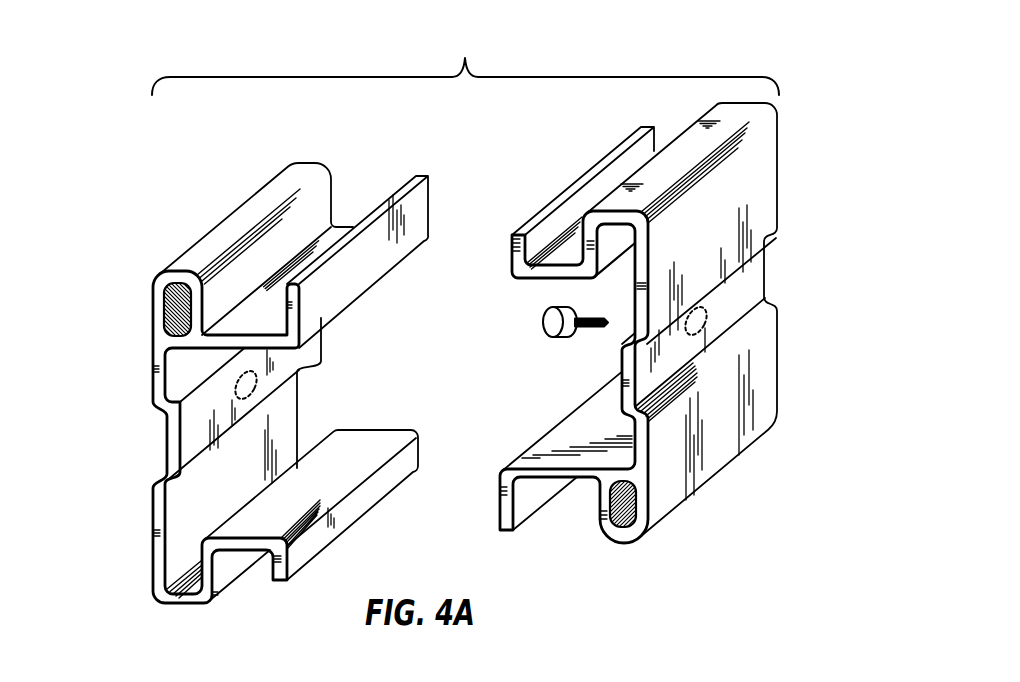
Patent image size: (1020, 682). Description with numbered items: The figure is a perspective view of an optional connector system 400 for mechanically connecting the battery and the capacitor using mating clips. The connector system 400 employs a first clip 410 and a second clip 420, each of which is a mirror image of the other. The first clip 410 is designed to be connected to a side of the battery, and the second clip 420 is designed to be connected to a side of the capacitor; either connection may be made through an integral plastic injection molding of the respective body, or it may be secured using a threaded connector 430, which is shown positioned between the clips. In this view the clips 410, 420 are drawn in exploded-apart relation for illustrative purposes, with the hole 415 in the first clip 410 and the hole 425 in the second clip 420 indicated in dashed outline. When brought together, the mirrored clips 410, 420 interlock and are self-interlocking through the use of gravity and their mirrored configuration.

The connector system 400 is at (661, 44).
The first clip 410 is at (155, 310).
The hole in first bracket 415 is at (255, 391).
The second clip 420 is at (760, 402).
The hole in second bracket 425 is at (703, 309).
The threaded connector 430 is at (560, 311).